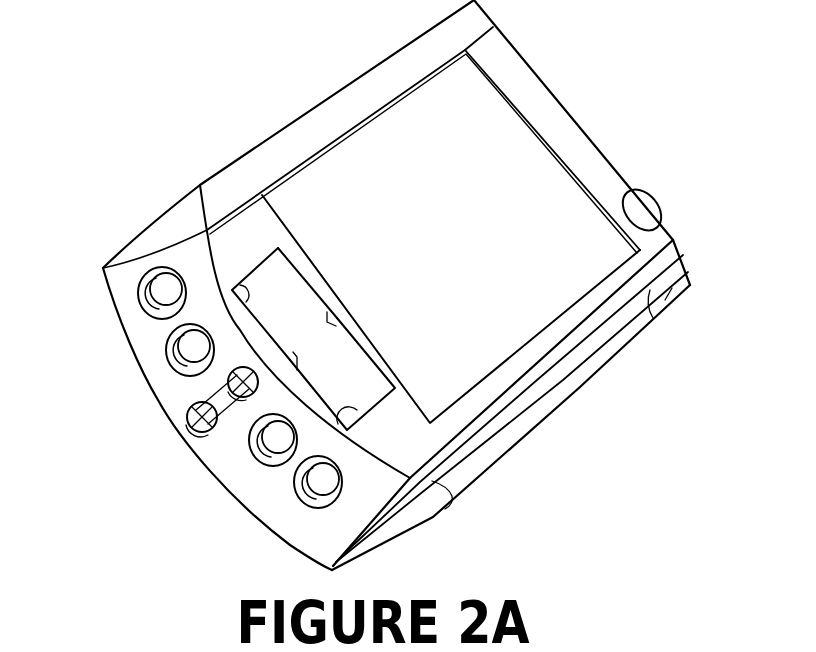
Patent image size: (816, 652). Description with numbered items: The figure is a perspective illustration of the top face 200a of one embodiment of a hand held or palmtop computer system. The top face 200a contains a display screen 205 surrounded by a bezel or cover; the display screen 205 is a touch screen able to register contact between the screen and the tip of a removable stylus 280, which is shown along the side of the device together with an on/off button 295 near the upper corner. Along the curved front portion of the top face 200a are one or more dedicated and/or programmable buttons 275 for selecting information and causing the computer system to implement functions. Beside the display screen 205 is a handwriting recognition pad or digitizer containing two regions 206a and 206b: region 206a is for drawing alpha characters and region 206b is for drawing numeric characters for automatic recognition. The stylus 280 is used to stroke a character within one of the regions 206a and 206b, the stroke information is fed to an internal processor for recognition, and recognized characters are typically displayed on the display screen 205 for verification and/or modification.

The top face 200a is at (105, 26).
The display screen 205 is at (433, 248).
The region for alpha characters 206a is at (258, 312).
The region for numeric characters 206b is at (322, 391).
The buttons 275 is at (165, 285).
The removable stylus 280 is at (579, 365).
The on/off button 295 is at (664, 203).